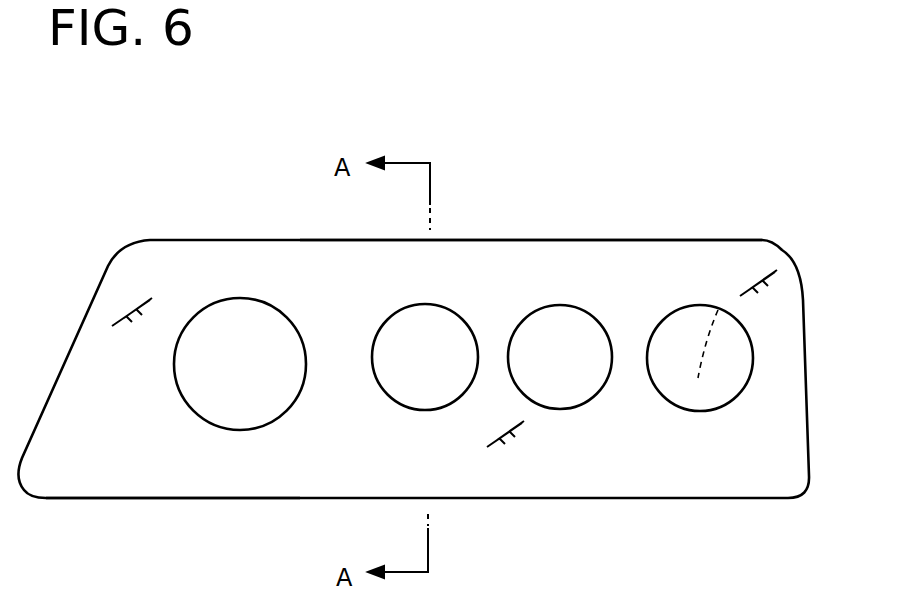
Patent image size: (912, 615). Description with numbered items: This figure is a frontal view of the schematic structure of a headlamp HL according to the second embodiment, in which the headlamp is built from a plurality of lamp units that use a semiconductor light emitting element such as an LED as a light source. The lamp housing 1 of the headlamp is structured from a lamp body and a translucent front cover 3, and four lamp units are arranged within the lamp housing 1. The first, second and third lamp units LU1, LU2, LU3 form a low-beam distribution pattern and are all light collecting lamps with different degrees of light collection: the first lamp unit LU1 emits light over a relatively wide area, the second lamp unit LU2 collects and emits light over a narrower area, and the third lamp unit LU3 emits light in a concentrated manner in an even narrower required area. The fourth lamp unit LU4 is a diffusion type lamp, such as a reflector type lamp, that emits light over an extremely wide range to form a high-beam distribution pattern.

The lamp housing 1 is at (762, 241).
The translucent front cover 3 is at (98, 474).
The headlamp HL is at (598, 240).
The first lamp unit LU1 is at (702, 402).
The second lamp unit LU2 is at (573, 398).
The third lamp unit LU3 is at (440, 398).
The fourth lamp unit LU4 is at (247, 424).